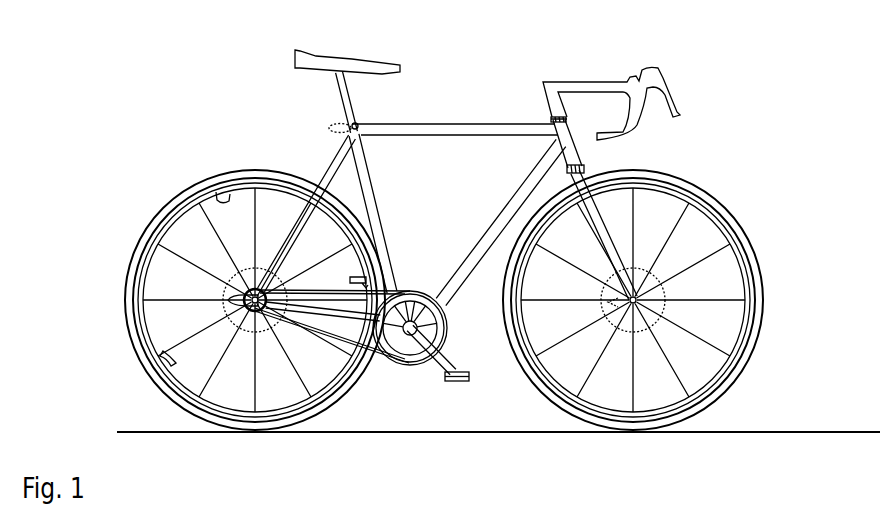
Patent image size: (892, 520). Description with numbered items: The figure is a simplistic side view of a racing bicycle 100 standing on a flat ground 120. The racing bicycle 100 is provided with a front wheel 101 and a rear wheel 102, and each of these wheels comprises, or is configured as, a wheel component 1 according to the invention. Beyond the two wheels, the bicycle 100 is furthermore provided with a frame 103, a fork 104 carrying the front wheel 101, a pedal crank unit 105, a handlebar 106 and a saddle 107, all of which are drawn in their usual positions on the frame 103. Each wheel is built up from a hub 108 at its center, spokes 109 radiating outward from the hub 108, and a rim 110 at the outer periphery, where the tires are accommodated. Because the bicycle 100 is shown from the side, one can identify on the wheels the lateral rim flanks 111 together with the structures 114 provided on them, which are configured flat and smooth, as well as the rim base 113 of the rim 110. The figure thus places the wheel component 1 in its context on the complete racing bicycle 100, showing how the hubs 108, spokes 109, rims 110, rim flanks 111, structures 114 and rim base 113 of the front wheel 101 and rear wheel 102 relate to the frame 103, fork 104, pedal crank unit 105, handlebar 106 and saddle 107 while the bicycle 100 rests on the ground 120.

The wheel component 1 is at (183, 150).
The bicycle 100 is at (258, 120).
The front wheel 101 is at (723, 207).
The rear wheel 102 is at (183, 192).
The frame 103 is at (463, 126).
The fork 104 is at (590, 212).
The pedal crank unit 105 is at (425, 277).
The handlebar 106 is at (588, 90).
The saddle 107 is at (331, 62).
The hub 108 is at (612, 314).
The spoke 109 is at (168, 366).
The rim 110 is at (746, 341).
The lateral rim flank 111 is at (643, 174).
The rim base 113 is at (216, 192).
The structure 114 is at (526, 333).
The flat ground 120 is at (395, 430).